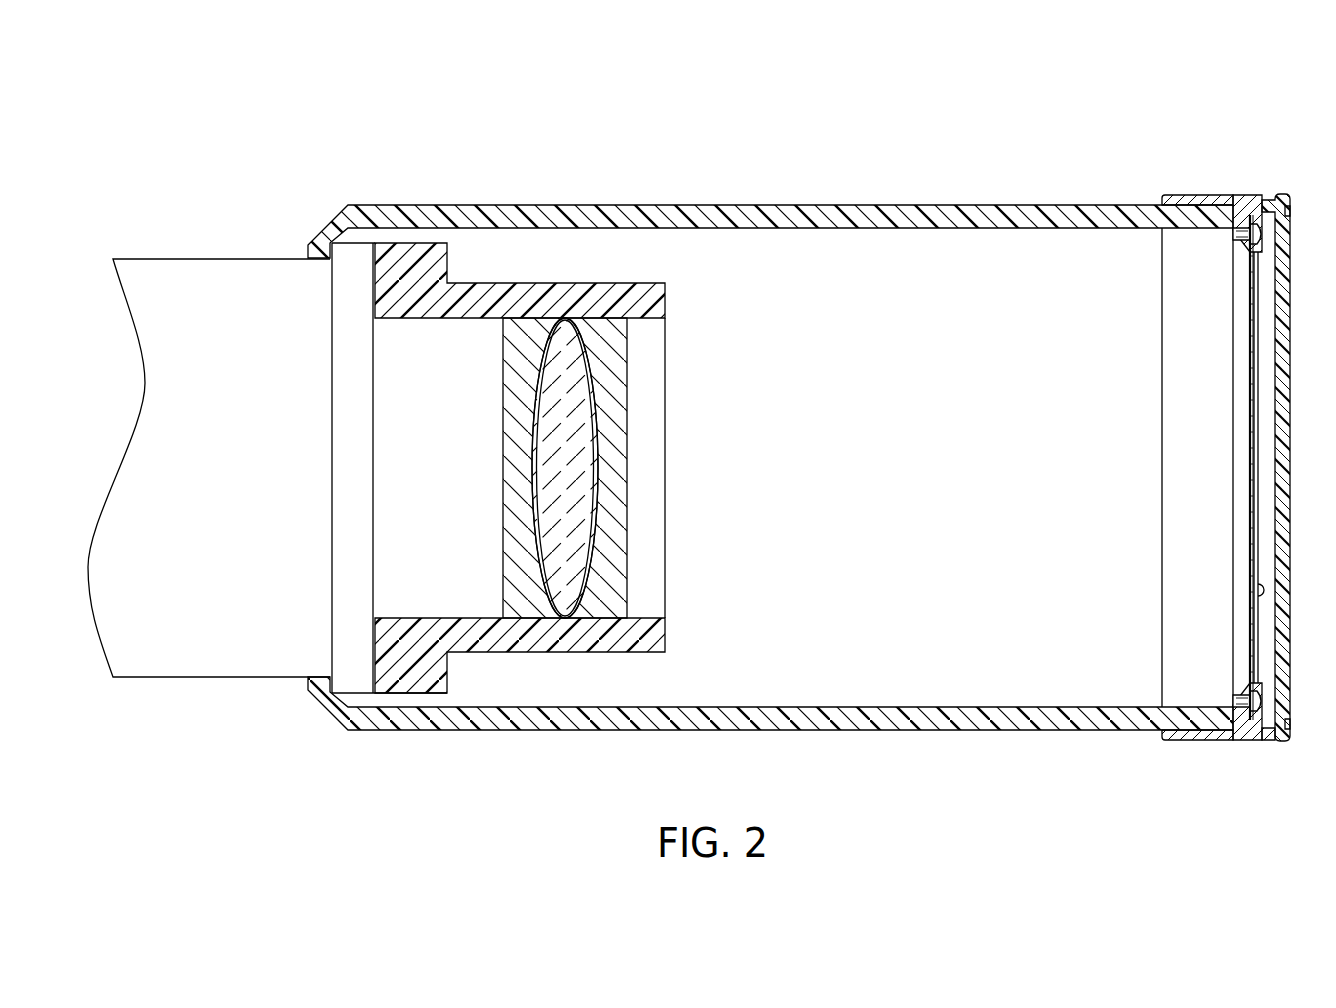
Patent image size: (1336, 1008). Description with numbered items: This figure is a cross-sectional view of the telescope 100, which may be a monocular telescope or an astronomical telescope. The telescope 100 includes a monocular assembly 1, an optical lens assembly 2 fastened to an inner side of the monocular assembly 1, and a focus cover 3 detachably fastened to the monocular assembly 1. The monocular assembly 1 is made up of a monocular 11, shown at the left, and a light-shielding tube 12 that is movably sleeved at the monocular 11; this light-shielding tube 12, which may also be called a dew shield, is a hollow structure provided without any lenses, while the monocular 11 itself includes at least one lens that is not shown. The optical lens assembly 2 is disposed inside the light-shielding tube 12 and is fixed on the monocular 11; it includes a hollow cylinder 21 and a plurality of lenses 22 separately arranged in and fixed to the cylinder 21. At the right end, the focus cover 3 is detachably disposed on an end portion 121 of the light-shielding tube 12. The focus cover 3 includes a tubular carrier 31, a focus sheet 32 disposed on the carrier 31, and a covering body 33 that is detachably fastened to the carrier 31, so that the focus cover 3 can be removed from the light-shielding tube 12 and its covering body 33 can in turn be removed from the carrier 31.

The telescope 100 is at (157, 92).
The monocular assembly 1 is at (390, 135).
The monocular 11 is at (271, 257).
The light-shielding tube 12 is at (378, 209).
The end portion 121 is at (1218, 713).
The optical lens assembly 2 is at (723, 155).
The cylinder 21 is at (607, 285).
The lenses 22 is at (627, 357).
The focus cover 3 is at (1313, 117).
The carrier 31 is at (1243, 196).
The focus sheet 32 is at (1246, 282).
The covering body 33 is at (1292, 227).